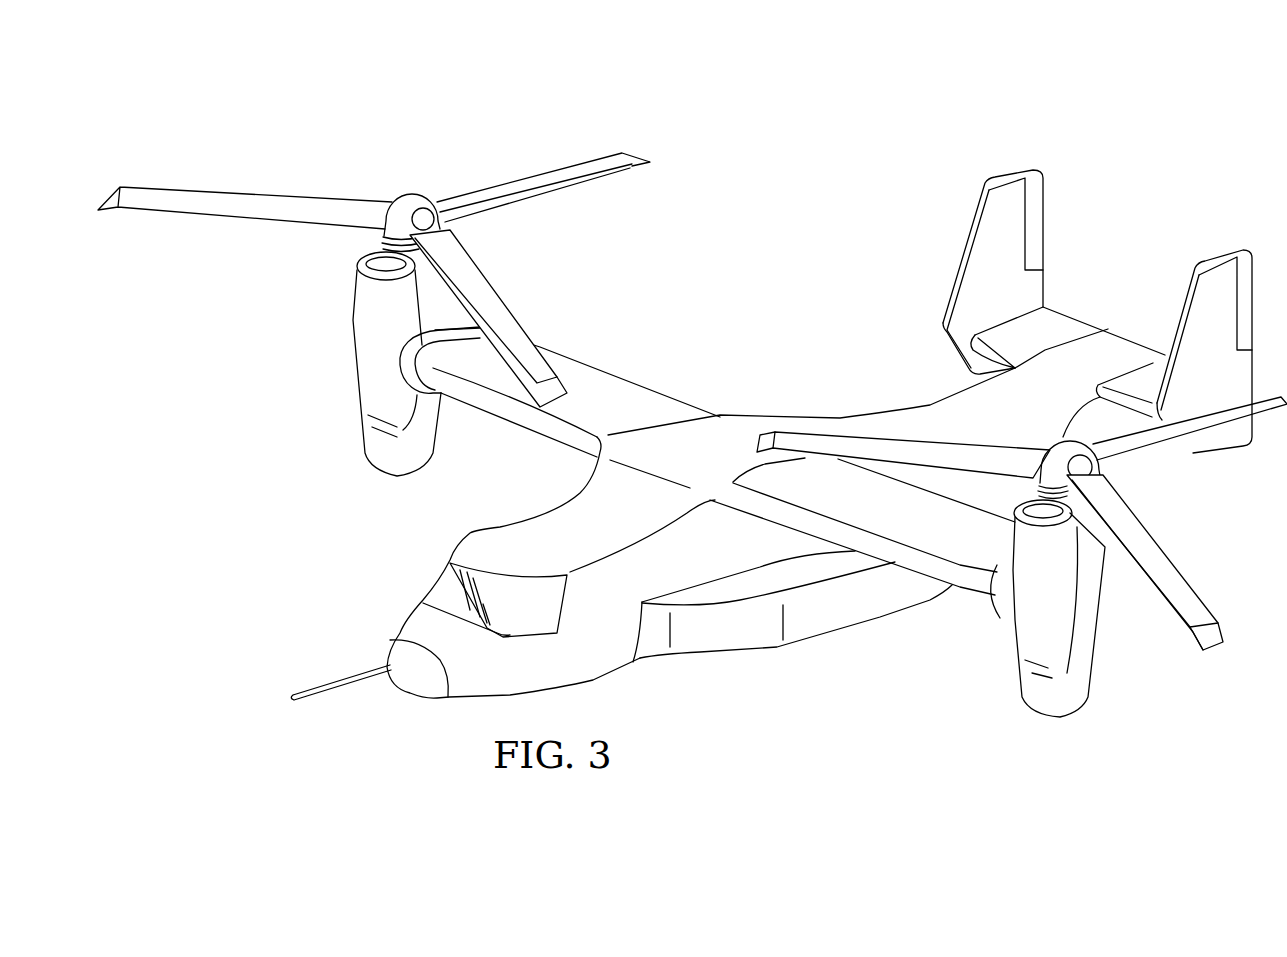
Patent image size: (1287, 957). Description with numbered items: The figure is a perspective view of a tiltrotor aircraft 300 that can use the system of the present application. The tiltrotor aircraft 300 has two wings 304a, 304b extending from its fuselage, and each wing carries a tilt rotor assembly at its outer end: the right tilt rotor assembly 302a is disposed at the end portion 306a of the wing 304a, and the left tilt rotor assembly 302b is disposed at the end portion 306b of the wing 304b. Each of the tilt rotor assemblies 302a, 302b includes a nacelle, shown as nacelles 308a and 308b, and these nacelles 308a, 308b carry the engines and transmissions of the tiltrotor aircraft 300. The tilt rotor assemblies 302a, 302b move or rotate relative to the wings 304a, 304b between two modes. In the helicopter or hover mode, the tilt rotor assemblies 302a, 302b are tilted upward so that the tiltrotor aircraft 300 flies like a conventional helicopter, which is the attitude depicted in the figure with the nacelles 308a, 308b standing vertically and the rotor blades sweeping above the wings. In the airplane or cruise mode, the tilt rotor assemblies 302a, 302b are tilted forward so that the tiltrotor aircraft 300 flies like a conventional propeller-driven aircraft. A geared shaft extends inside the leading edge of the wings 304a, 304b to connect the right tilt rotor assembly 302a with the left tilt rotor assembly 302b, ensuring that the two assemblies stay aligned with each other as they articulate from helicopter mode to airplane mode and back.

The tiltrotor aircraft 300 is at (975, 112).
The tilt rotor assembly 302a is at (374, 314).
The tilt rotor assembly 302b is at (1022, 577).
The wing 304a is at (618, 387).
The wing 304b is at (860, 550).
The end portion 306a is at (458, 320).
The end portion 306b is at (997, 504).
The nacelle 308a is at (355, 368).
The nacelle 308b is at (1103, 657).